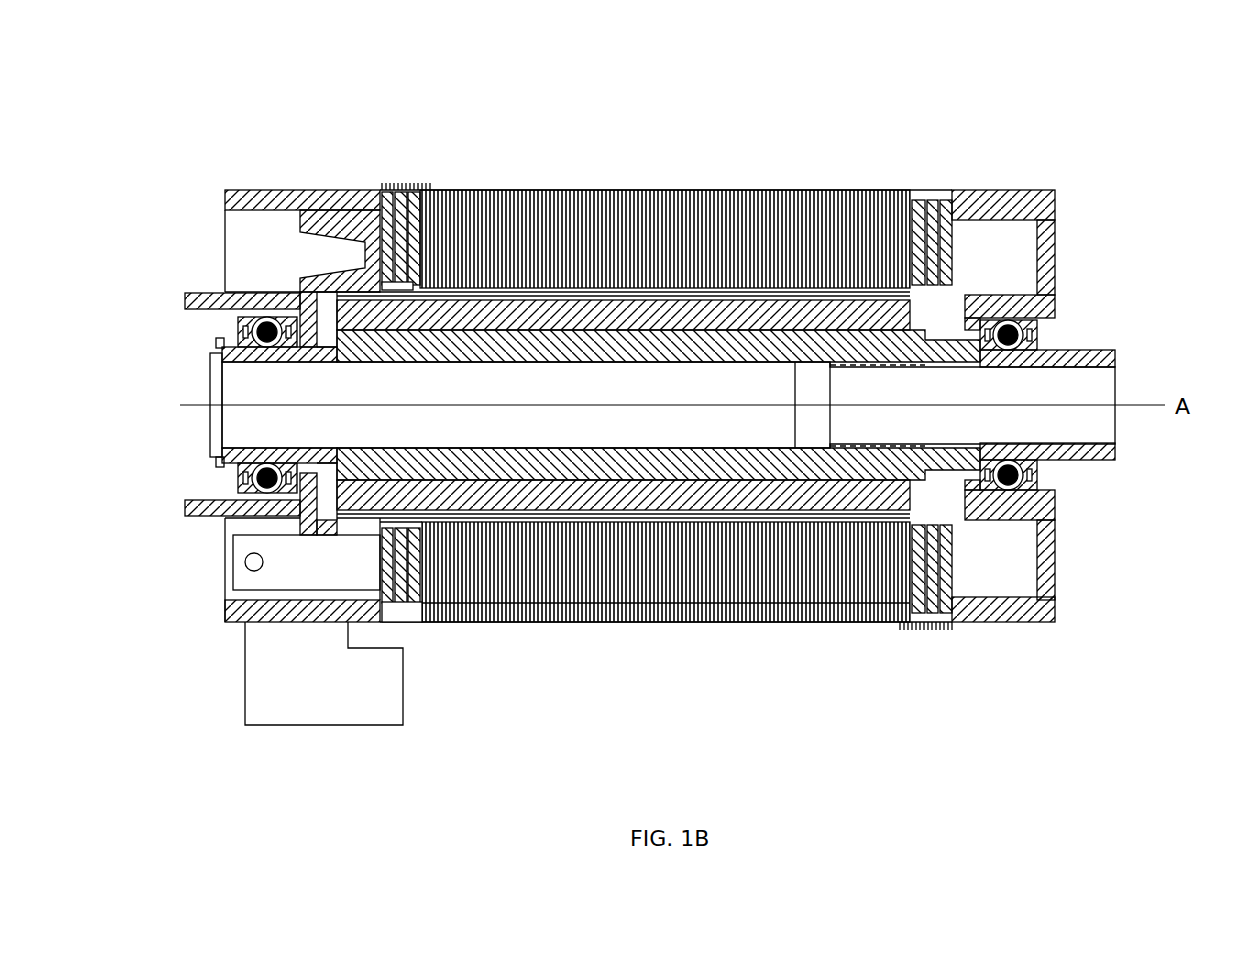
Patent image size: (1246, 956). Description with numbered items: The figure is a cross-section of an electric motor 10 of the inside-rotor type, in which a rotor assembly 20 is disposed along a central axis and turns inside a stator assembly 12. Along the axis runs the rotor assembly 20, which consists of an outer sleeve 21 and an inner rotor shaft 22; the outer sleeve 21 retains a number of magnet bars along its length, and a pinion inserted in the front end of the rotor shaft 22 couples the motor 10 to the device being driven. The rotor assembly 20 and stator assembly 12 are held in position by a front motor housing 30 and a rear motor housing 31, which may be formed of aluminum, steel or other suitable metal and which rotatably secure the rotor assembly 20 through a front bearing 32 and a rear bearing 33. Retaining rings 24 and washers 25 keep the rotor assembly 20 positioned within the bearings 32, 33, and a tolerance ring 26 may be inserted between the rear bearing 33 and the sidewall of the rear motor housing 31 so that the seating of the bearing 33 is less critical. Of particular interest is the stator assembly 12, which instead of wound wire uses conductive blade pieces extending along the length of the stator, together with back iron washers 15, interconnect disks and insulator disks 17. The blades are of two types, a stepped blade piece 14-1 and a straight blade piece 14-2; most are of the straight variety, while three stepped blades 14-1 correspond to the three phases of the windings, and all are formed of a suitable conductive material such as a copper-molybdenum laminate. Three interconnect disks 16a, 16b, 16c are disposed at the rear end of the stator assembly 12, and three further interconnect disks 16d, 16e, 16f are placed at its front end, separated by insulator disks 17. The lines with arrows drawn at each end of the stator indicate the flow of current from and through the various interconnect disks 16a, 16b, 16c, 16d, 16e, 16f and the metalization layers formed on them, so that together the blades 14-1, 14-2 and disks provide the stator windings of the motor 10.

The electric motor 10 is at (707, 83).
The stator assembly 12 is at (641, 190).
The stepped blade piece 14-1 is at (240, 575).
The straight blade piece 14-2 is at (415, 285).
The back iron washers 15 is at (695, 200).
The interconnect disk 16a is at (378, 168).
The interconnect disk 16b is at (399, 168).
The interconnect disk 16c is at (418, 168).
The interconnect disk 16d is at (910, 642).
The interconnect disk 16e is at (931, 642).
The interconnect disk 16f is at (949, 642).
The insulator disks 17 is at (389, 168).
The rotor assembly 20 is at (1053, 512).
The outer sleeve 21 is at (553, 522).
The inner rotor shaft 22 is at (793, 307).
The retaining rings 24 is at (213, 346).
The washers 25 is at (216, 340).
The tolerance ring 26 is at (240, 320).
The front motor housing 30 is at (1018, 190).
The rear motor housing 31 is at (226, 191).
The front bearing 32 is at (1010, 322).
The rear bearing 33 is at (233, 477).